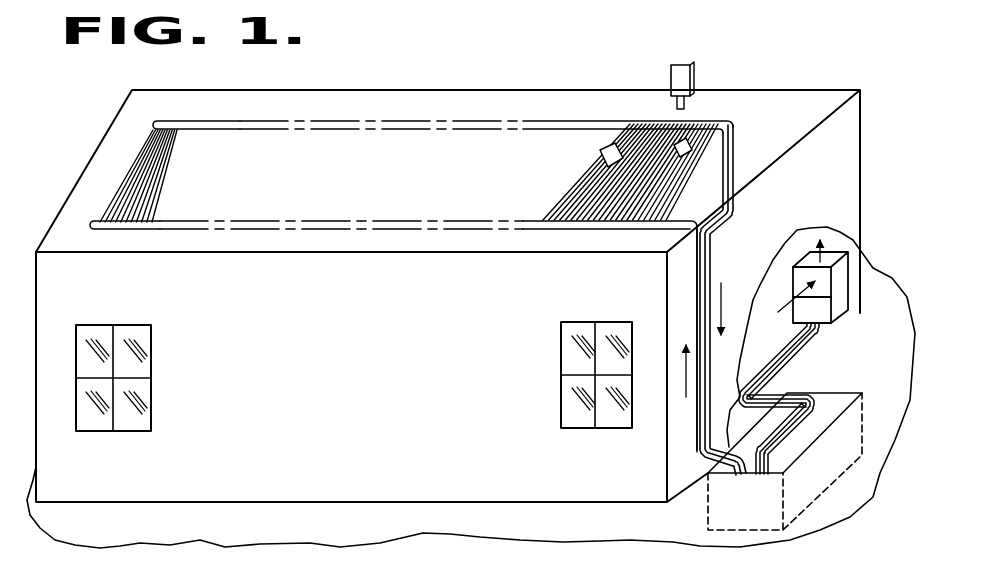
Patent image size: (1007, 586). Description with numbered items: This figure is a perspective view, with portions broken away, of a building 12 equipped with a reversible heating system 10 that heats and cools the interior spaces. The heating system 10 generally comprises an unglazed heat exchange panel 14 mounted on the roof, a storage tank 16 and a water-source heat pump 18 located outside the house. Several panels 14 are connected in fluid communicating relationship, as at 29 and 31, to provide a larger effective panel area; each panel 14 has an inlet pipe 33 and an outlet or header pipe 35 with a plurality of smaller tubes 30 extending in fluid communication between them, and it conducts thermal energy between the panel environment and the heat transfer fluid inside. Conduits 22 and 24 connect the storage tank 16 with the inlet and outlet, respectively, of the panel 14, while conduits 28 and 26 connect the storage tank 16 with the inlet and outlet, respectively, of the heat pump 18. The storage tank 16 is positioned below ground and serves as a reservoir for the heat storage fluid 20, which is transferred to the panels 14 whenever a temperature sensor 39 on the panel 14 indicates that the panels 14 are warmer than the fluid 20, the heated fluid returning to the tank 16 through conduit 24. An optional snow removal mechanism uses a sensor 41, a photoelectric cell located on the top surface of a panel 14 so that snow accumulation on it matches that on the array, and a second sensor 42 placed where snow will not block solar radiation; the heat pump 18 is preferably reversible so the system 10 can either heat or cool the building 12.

The heating system 10 is at (472, 422).
The building 12 is at (370, 378).
The unglazed heat exchange panel 14 is at (181, 121).
The storage tank 16 is at (748, 512).
The water-source heat pump 18 is at (843, 266).
The heat storage fluid 20 is at (832, 410).
The conduit 22 is at (697, 290).
The conduit 24 is at (714, 252).
The conduit 26 is at (788, 354).
The conduit 28 is at (800, 353).
The panel connection 29 is at (151, 238).
The smaller tubes 30 is at (156, 143).
The panel connection 31 is at (226, 117).
The inlet pipe 33 is at (193, 232).
The outlet or header pipe 35 is at (265, 126).
The temperature sensor 39 is at (690, 136).
The sensor 41 is at (612, 146).
The sensor 42 is at (676, 64).